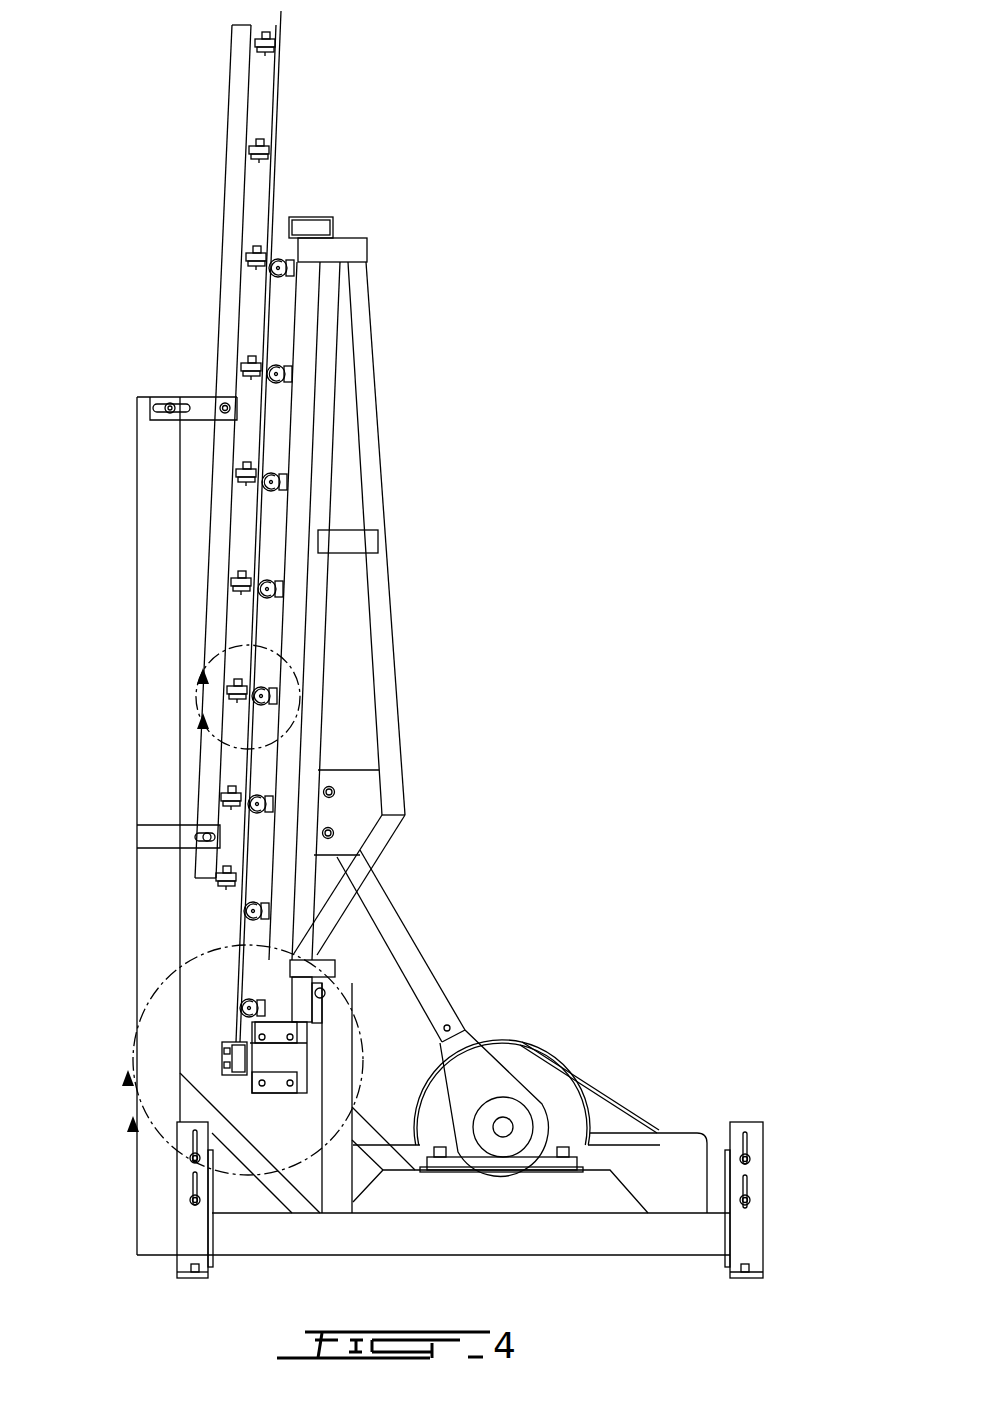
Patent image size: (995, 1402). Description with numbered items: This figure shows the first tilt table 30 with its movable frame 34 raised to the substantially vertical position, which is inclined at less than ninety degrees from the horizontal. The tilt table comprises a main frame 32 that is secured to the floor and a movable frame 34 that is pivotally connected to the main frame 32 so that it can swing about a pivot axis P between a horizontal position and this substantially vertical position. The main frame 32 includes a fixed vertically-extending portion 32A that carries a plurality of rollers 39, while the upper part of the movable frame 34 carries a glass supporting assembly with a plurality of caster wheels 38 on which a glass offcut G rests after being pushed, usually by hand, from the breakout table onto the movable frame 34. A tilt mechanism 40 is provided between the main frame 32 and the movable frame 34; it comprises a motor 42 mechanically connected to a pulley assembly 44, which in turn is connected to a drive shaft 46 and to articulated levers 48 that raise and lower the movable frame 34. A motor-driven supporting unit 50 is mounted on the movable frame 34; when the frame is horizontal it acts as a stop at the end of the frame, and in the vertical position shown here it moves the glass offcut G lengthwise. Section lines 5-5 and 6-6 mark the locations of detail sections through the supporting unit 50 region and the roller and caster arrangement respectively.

The first tilt table 30 is at (675, 348).
The main frame 32 is at (155, 1033).
The fixed vertically-extending portion 32A is at (232, 217).
The glass offcut G is at (273, 208).
The movable frame 34 is at (350, 250).
The caster wheels 38 is at (275, 479).
The rollers 39 is at (263, 160).
The tilt mechanism 40 is at (650, 990).
The motor 42 is at (653, 1147).
The pulley assembly 44 is at (543, 1078).
The drive shaft 46 is at (503, 1128).
The articulated levers 48 is at (415, 975).
The motor-driven supporting unit 50 is at (230, 1092).
The pivot axis P is at (322, 992).
The section line 5-5 is at (220, 1060).
The section line 6-6 is at (197, 700).